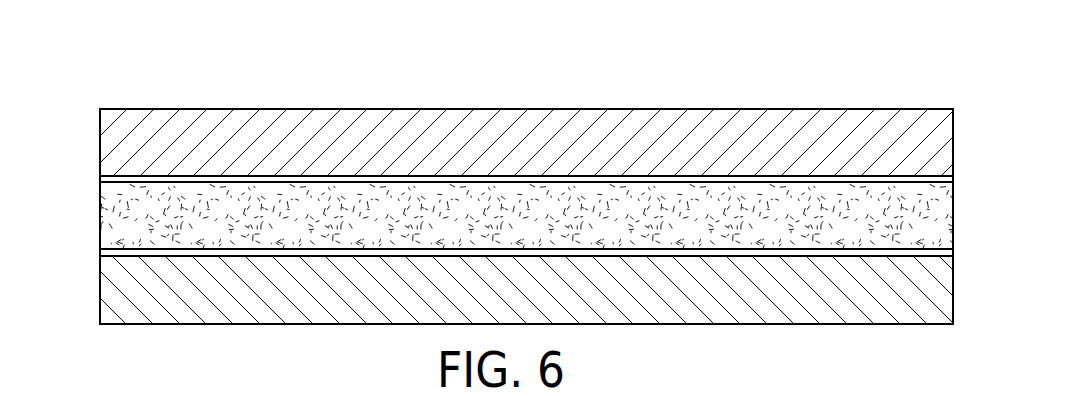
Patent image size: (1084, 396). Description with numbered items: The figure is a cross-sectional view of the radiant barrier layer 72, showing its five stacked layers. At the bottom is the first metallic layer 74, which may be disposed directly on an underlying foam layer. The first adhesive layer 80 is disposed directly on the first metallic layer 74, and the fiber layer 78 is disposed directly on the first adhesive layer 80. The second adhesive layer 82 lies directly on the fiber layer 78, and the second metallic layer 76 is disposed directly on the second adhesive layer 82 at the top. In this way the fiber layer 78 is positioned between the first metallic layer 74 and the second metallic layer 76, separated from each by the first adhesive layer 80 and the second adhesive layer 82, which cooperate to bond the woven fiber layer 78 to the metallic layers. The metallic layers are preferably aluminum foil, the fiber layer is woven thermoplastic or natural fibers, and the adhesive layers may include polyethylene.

The radiant barrier layer 72 is at (591, 57).
The first metallic layer 74 is at (113, 292).
The second metallic layer 76 is at (112, 143).
The fiber layer 78 is at (118, 210).
The first adhesive layer 80 is at (100, 255).
The second adhesive layer 82 is at (100, 178).